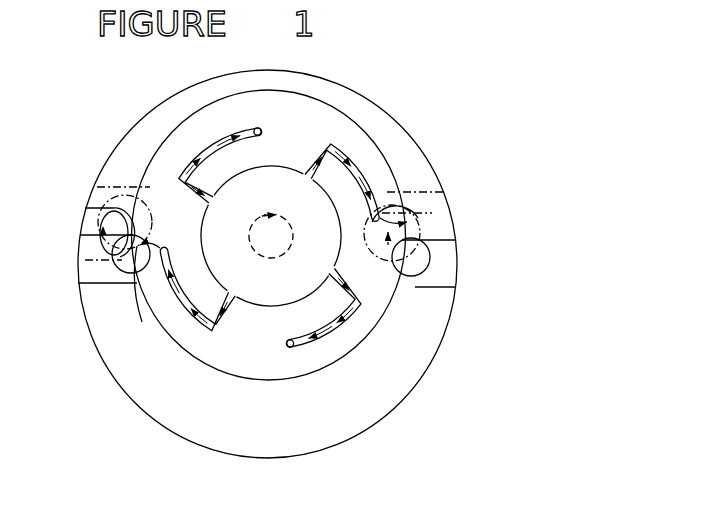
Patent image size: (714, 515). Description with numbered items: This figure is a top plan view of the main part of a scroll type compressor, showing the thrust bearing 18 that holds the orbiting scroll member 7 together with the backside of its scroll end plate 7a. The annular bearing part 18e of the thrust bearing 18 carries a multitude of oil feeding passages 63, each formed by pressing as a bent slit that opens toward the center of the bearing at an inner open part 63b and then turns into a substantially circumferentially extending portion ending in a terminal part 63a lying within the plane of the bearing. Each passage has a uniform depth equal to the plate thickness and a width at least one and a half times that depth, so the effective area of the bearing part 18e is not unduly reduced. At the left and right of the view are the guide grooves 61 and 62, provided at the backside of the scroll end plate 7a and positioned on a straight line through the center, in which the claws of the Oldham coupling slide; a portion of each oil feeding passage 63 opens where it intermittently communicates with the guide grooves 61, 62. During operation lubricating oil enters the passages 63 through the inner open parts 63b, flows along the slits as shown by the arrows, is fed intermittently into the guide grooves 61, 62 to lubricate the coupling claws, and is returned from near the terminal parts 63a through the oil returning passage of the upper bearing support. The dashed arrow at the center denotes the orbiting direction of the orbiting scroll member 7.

The orbiting scroll member 7 is at (426, 148).
The scroll end plate 7a is at (130, 152).
The thrust bearing 18 is at (303, 135).
The bearing part 18e is at (163, 307).
The guide groove 61 is at (100, 283).
The guide groove 62 is at (455, 285).
The oil feeding passage 63 is at (212, 142).
The terminal part 63a is at (256, 124).
The inner open part 63b is at (214, 198).